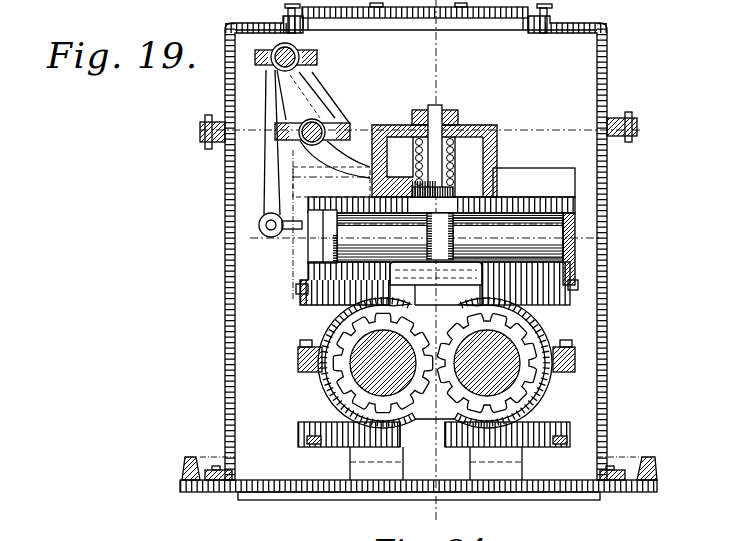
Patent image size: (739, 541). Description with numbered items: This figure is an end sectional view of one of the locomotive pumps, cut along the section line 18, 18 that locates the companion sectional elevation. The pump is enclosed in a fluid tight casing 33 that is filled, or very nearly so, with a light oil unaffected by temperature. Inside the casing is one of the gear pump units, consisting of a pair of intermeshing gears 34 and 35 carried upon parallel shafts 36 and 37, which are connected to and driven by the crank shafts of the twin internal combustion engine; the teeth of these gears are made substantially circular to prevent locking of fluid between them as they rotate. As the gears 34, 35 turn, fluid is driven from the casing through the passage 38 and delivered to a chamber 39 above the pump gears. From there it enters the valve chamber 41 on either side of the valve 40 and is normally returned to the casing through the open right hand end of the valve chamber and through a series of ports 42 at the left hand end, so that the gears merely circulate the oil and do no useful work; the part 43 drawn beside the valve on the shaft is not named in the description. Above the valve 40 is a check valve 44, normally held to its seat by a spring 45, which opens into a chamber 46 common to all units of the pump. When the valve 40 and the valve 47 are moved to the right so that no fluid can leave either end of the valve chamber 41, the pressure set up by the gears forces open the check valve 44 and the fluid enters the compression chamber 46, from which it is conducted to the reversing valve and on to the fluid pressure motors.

The section line 18 is at (437, 268).
The fluid tight casing 33 is at (608, 105).
The gear 34 is at (532, 347).
The gear 35 is at (326, 360).
The shaft 36 is at (495, 372).
The shaft 37 is at (380, 368).
The passage 38 is at (440, 427).
The chamber 39 is at (443, 302).
The valve 40 is at (437, 225).
The valve chamber 41 is at (553, 242).
The ports 42 is at (318, 212).
The hub collar 43 is at (455, 200).
The check valve 44 is at (447, 190).
The spring 45 is at (453, 157).
The chamber 46 is at (395, 150).
The valve 47 is at (318, 237).